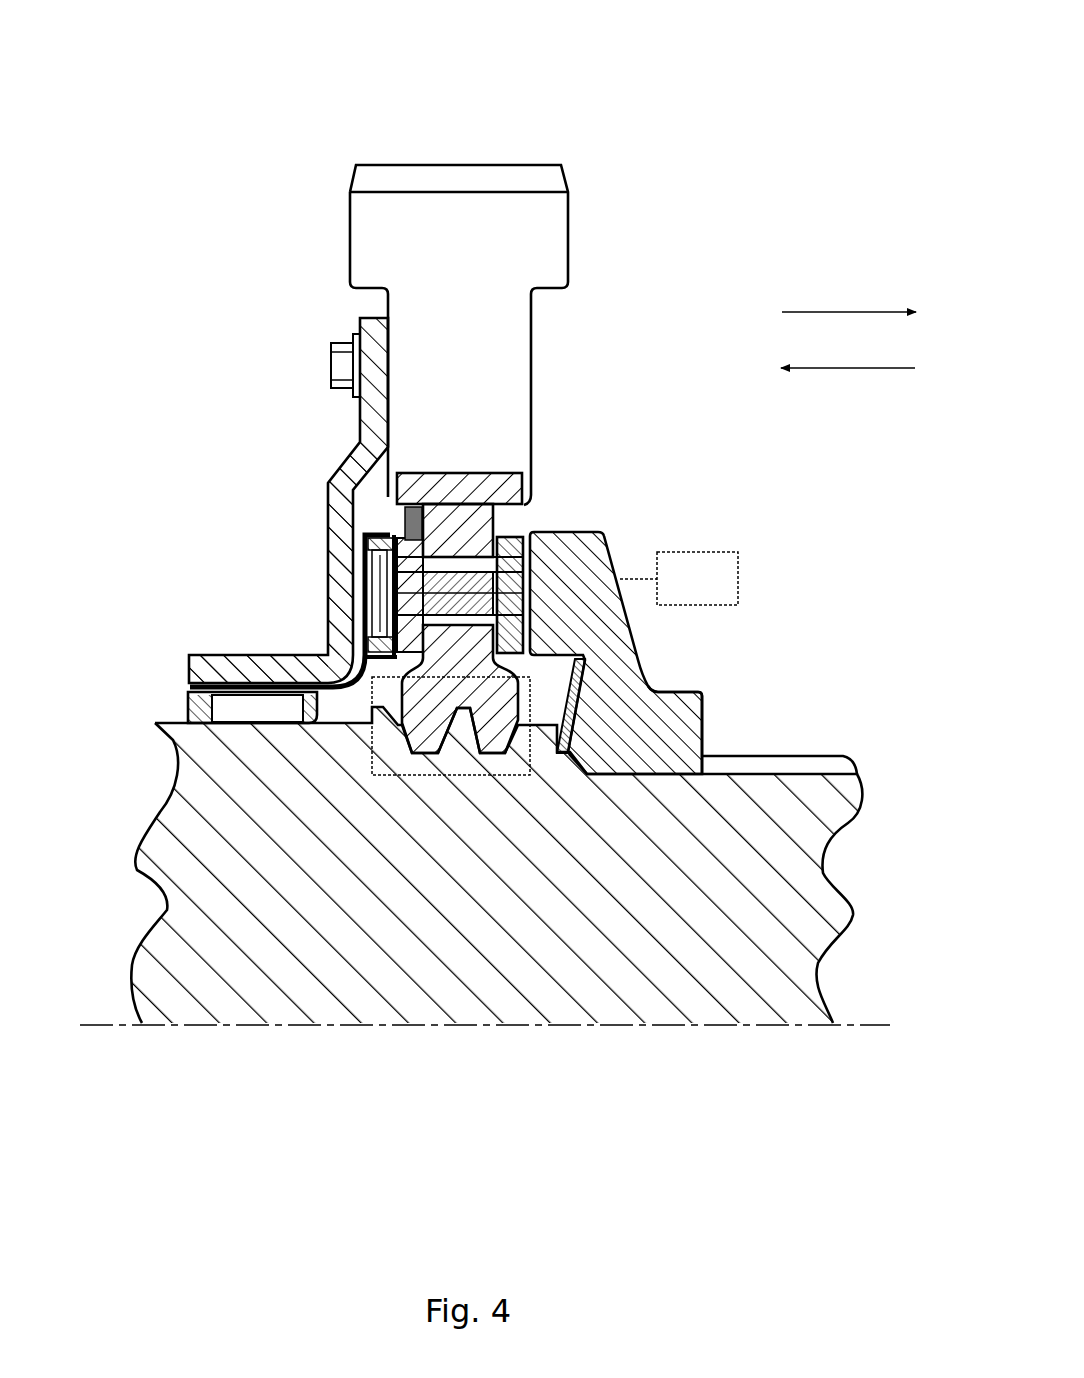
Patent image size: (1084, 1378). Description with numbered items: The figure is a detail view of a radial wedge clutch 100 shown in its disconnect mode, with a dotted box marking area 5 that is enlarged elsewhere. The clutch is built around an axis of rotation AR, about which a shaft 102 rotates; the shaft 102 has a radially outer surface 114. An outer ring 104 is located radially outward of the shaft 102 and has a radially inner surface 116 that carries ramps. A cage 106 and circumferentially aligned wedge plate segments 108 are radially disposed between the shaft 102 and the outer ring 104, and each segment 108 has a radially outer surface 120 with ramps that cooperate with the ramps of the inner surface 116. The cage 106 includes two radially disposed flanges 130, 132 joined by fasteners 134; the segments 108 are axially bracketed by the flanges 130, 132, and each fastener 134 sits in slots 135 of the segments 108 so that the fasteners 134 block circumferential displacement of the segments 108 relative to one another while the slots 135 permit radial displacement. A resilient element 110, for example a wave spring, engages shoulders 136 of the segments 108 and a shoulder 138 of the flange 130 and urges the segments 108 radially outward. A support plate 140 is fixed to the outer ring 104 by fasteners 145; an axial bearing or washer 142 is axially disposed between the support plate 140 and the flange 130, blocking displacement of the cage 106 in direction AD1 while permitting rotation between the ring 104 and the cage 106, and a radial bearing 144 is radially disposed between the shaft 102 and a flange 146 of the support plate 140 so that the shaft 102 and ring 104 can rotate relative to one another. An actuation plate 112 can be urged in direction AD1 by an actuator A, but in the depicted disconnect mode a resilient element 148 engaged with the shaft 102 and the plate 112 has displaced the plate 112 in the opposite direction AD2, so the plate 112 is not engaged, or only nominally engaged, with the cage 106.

The wedge clutch 100 is at (810, 125).
The shaft 102 is at (860, 832).
The outer ring 104 is at (571, 222).
The cage 106 is at (511, 524).
The wedge plate segments 108 is at (438, 497).
The resilient element 110 is at (405, 522).
The actuation plate 112 is at (690, 692).
The radially outer surface 114 is at (760, 757).
The radially inner surface 116 is at (482, 493).
The radially outer surface 120 is at (525, 497).
The flange 130 is at (360, 638).
The flange 132 is at (525, 535).
The fasteners 134 is at (515, 585).
The slots 135 is at (464, 553).
The shoulders 136 is at (342, 470).
The shoulder 138 is at (365, 570).
The support plate 140 is at (351, 304).
The axial bearing 142 is at (363, 550).
The radial bearing 144 is at (188, 700).
The fasteners 145 is at (331, 368).
The flange 146 is at (262, 655).
The resilient element 148 is at (578, 718).
The actuator A is at (727, 552).
The axis of rotation AR is at (790, 1028).
The axial direction AD1 is at (847, 368).
The axial direction AD2 is at (823, 312).
The area 5 is at (425, 776).